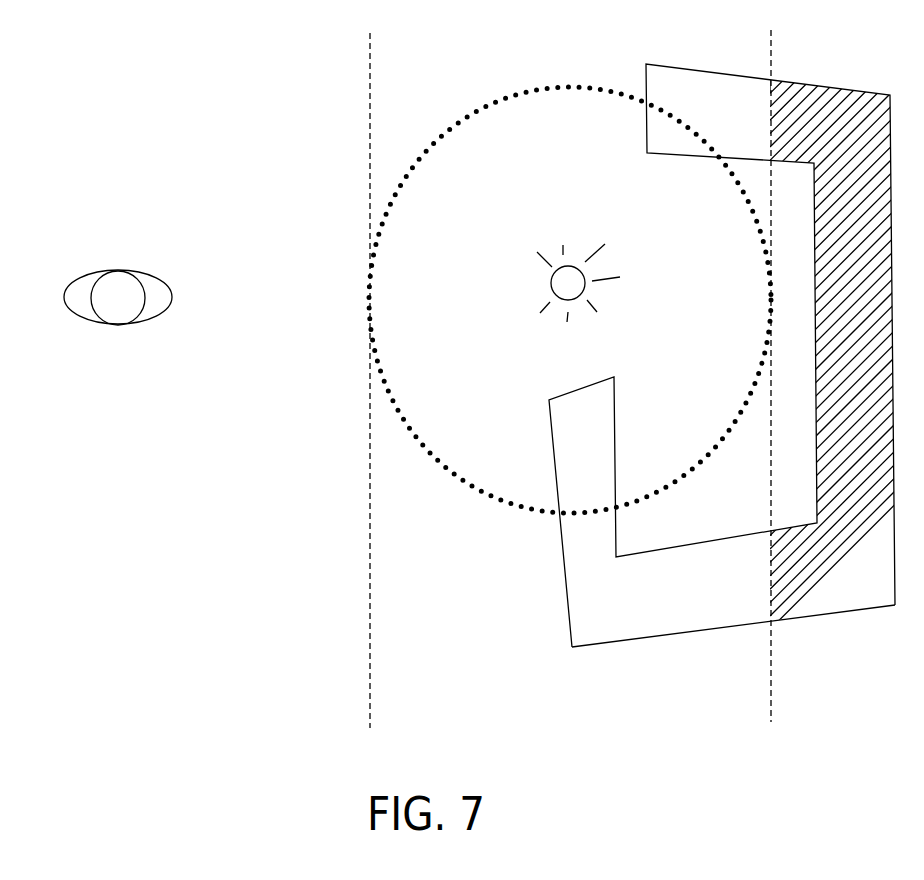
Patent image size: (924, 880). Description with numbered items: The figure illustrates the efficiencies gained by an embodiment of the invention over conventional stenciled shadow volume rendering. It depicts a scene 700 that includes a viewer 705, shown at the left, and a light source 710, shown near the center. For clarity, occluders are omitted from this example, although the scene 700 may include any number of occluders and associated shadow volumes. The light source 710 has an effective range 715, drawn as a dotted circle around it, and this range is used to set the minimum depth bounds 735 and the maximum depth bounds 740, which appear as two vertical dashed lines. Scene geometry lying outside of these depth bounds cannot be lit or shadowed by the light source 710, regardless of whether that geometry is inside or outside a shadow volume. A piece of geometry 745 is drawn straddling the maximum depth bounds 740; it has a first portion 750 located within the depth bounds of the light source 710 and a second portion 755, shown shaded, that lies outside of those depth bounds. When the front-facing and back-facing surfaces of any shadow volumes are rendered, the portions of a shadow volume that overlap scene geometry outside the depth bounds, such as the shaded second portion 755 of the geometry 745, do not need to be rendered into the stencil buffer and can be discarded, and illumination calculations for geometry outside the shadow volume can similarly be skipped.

The scene 700 is at (228, 85).
The viewer 705 is at (137, 263).
The light source 710 is at (540, 287).
The effective range 715 is at (475, 110).
The minimum depth bounds 735 is at (371, 653).
The maximum depth bounds 740 is at (778, 663).
The geometry 745 is at (608, 648).
The first portion 750 is at (722, 355).
The second portion 755 is at (833, 87).